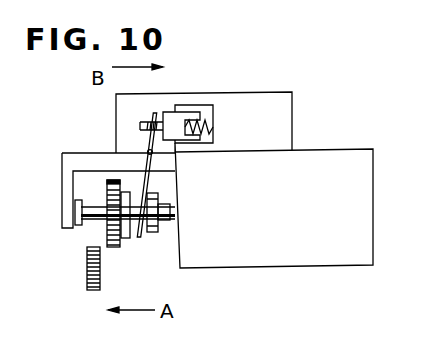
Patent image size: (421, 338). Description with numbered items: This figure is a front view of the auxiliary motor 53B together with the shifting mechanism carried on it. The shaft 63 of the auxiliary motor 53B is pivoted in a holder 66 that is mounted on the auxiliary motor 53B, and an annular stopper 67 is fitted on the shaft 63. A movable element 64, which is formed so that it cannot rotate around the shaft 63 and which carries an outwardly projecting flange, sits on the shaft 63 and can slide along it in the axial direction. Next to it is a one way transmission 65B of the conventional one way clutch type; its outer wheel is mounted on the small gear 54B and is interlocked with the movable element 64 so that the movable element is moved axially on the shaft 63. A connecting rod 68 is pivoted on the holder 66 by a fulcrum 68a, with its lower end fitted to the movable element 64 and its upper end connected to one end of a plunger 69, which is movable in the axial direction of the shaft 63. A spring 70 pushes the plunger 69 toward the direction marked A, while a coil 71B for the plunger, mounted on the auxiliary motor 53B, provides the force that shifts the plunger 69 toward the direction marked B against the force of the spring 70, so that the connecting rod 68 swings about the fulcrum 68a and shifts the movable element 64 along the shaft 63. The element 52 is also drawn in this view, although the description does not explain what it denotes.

The rack 52 is at (87, 283).
The auxiliary motor 53B is at (340, 149).
The small gear 54B is at (136, 284).
The shaft 63 is at (168, 218).
The movable element 64 is at (150, 237).
The one way transmission 65B is at (118, 247).
The holder 66 is at (62, 166).
The annular stopper 67 is at (77, 227).
The connecting rod 68 is at (148, 136).
The fulcrum 68a is at (148, 152).
The plunger 69 is at (172, 112).
The spring 70 is at (203, 121).
The coil 71B is at (270, 92).